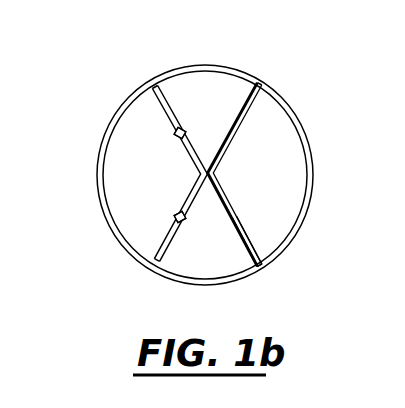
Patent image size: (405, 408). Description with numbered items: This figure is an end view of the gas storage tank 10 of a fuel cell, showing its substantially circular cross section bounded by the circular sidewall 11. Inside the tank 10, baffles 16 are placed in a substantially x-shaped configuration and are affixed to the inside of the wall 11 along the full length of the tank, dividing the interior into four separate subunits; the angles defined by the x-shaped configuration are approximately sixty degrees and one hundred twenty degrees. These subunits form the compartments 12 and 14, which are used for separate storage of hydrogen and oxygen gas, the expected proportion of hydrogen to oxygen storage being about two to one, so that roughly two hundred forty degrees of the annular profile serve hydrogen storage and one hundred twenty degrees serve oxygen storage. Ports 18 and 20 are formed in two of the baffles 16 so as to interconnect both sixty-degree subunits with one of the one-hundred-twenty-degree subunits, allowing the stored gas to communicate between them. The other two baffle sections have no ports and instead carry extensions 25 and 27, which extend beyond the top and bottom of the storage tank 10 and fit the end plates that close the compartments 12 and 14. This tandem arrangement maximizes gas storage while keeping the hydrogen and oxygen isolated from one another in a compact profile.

The gas storage tank 10 is at (121, 88).
The circular sidewall 11 is at (313, 180).
The compartment 12 is at (282, 187).
The compartment 14 is at (157, 192).
The baffle 16 is at (170, 104).
The port 18 is at (176, 134).
The port 20 is at (177, 220).
The baffle extension 25 is at (263, 262).
The baffle extension 27 is at (241, 120).